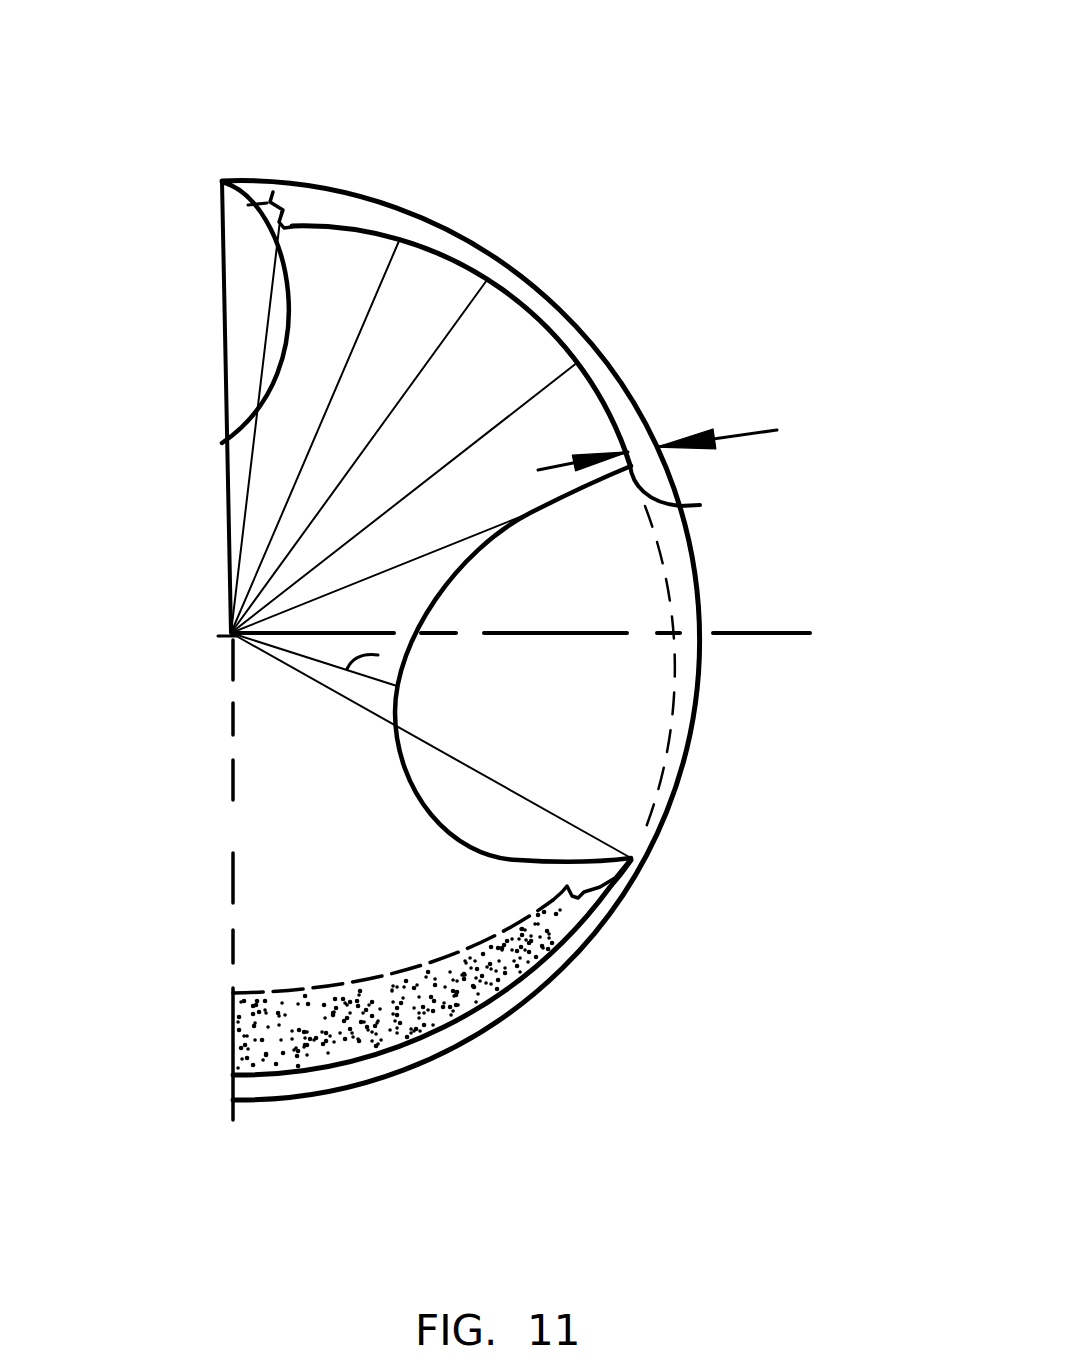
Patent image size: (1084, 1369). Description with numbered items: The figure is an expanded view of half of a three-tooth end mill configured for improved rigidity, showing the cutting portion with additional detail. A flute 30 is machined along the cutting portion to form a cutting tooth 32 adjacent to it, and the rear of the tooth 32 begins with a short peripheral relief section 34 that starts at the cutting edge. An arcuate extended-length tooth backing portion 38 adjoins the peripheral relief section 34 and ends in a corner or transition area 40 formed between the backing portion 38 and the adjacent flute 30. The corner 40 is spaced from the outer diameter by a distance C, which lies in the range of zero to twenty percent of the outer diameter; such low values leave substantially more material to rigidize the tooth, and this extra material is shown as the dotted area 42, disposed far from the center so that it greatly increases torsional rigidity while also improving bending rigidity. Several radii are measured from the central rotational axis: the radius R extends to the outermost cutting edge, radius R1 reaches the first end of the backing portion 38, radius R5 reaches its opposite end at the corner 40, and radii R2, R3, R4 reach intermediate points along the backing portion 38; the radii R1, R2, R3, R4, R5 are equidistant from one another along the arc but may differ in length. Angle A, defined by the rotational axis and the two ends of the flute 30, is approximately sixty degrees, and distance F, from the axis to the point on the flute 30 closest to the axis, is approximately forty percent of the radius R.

The flute 30 is at (593, 590).
The cutting tooth 32 is at (290, 200).
The peripheral relief section 34 is at (245, 180).
The arcuate extended-length tooth backing portion 38 is at (527, 300).
The corner or transition area 40 is at (700, 505).
The dotted area 42 is at (308, 1018).
The angle A is at (668, 701).
The distance C is at (675, 424).
The distance F is at (370, 660).
The radius R is at (213, 180).
The radius R1 is at (268, 320).
The radius R2 is at (320, 423).
The radius R3 is at (328, 502).
The radius R4 is at (336, 555).
The radius R5 is at (231, 648).